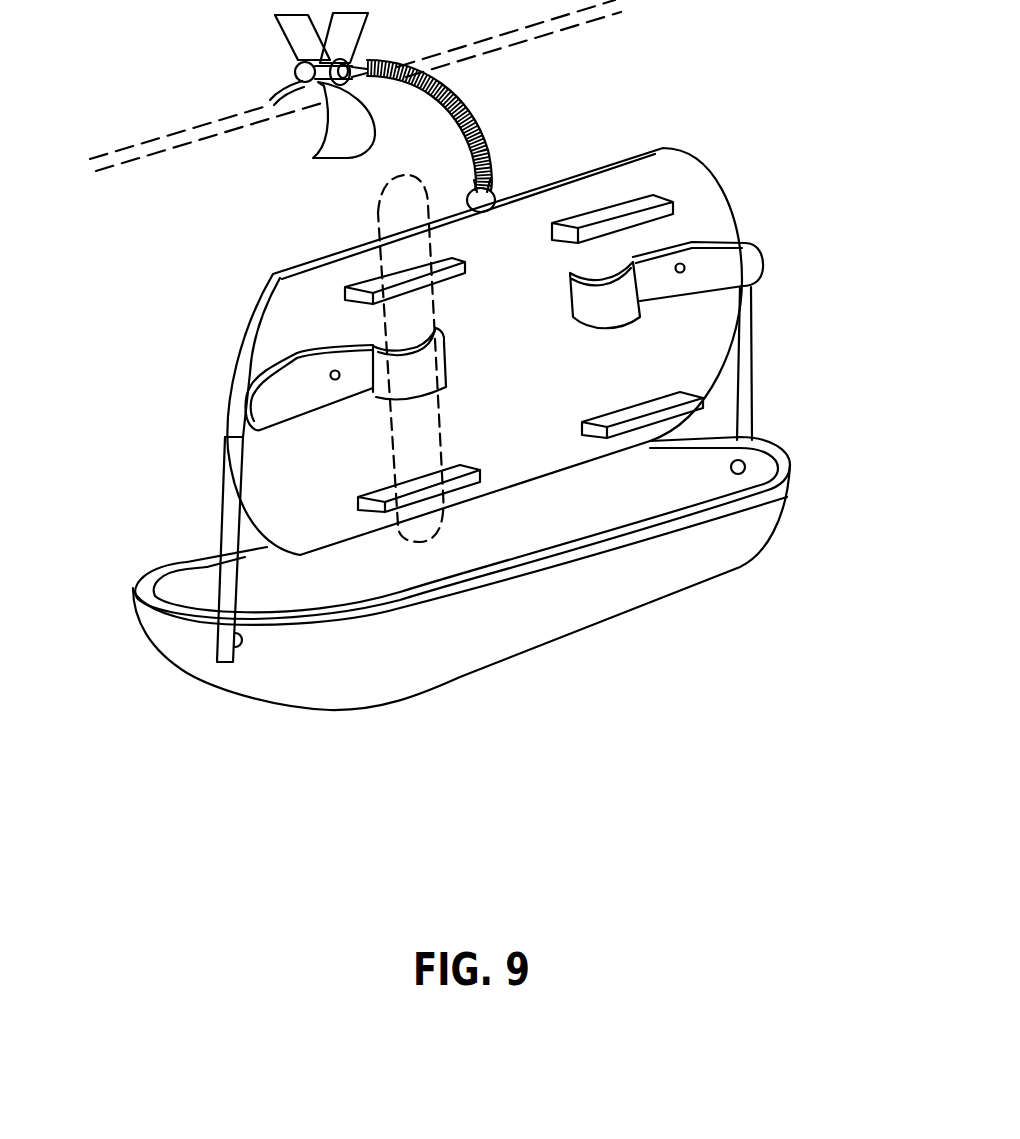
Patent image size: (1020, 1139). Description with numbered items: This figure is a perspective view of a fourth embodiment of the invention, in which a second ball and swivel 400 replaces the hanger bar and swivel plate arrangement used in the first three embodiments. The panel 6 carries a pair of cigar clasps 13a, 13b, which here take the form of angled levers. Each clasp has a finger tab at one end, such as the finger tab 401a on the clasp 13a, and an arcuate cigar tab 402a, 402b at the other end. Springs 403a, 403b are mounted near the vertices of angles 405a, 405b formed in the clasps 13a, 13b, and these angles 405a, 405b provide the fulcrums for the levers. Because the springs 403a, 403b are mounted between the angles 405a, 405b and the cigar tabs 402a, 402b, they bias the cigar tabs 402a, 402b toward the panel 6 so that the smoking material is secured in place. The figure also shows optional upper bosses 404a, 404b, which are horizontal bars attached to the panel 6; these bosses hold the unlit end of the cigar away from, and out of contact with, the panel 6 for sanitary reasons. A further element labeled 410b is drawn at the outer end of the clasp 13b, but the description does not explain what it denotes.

The panel 6 is at (525, 378).
The second ball and swivel 400 is at (497, 189).
The upper boss 404a is at (343, 287).
The upper boss 404b is at (600, 222).
The arcuate cigar tab 402a is at (413, 369).
The arcuate cigar tab 402b is at (590, 307).
The cigar clasp 13a is at (293, 375).
The cigar clasp 13b is at (705, 248).
The finger tab 401a is at (255, 410).
The right bracket rounded end 410b is at (750, 262).
The angle 405a is at (312, 383).
The angle 405b is at (686, 272).
The spring 403a is at (330, 380).
The spring 403b is at (690, 258).